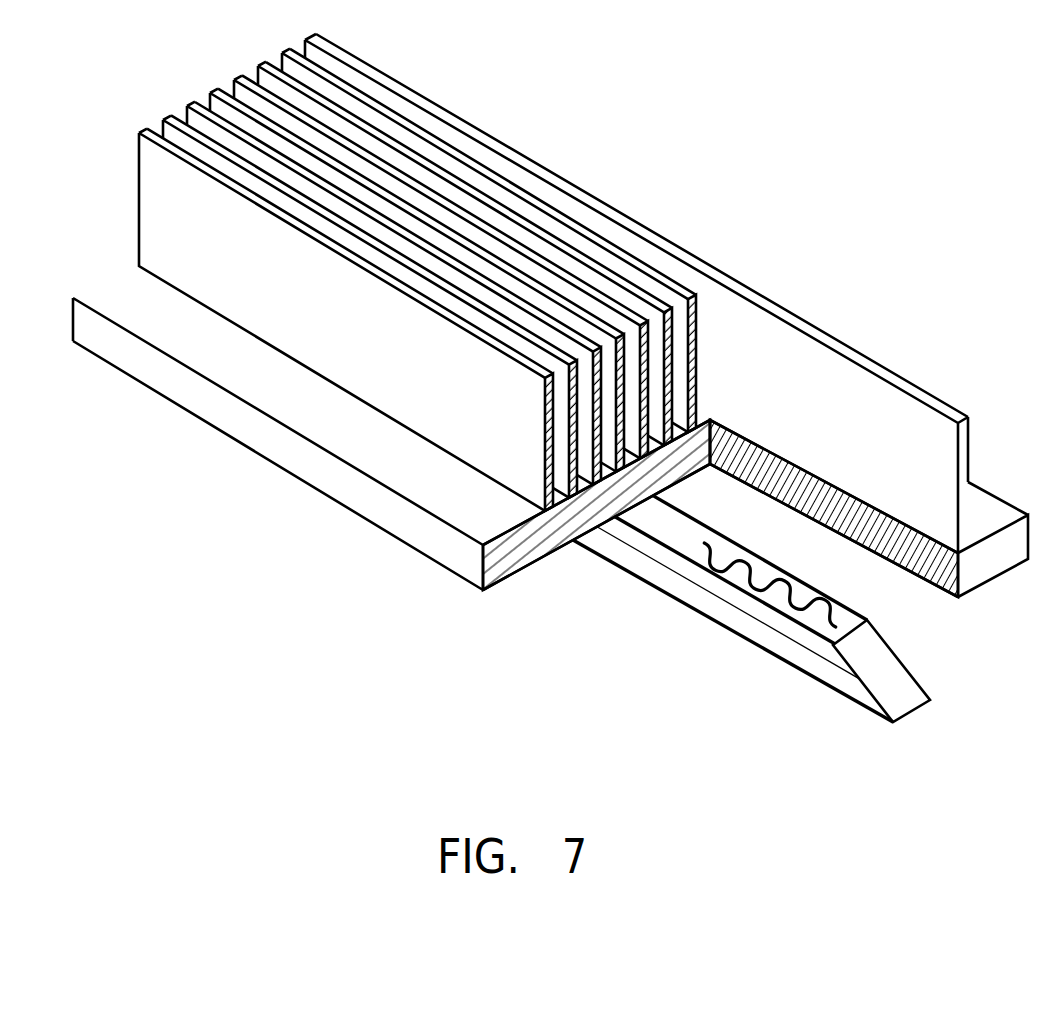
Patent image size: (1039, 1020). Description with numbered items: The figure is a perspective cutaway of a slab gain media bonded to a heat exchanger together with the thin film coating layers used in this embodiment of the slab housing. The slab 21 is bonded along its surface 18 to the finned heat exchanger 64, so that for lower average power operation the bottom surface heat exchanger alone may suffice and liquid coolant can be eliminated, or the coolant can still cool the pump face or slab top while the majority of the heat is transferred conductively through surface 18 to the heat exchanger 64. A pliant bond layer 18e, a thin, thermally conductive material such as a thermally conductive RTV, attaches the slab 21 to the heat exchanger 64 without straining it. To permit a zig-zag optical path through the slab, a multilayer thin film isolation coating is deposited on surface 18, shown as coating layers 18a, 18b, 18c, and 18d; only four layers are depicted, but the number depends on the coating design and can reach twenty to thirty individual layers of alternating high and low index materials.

The heat exchanger 64 is at (550, 321).
The surface 18 is at (777, 634).
The thin film coating layer 18a is at (734, 658).
The thin film coating layer 18b is at (733, 635).
The thin film coating layer 18c is at (716, 608).
The thin film coating layer 18d is at (694, 584).
The pliant bond layer 18e is at (693, 558).
The slab 21 is at (918, 662).